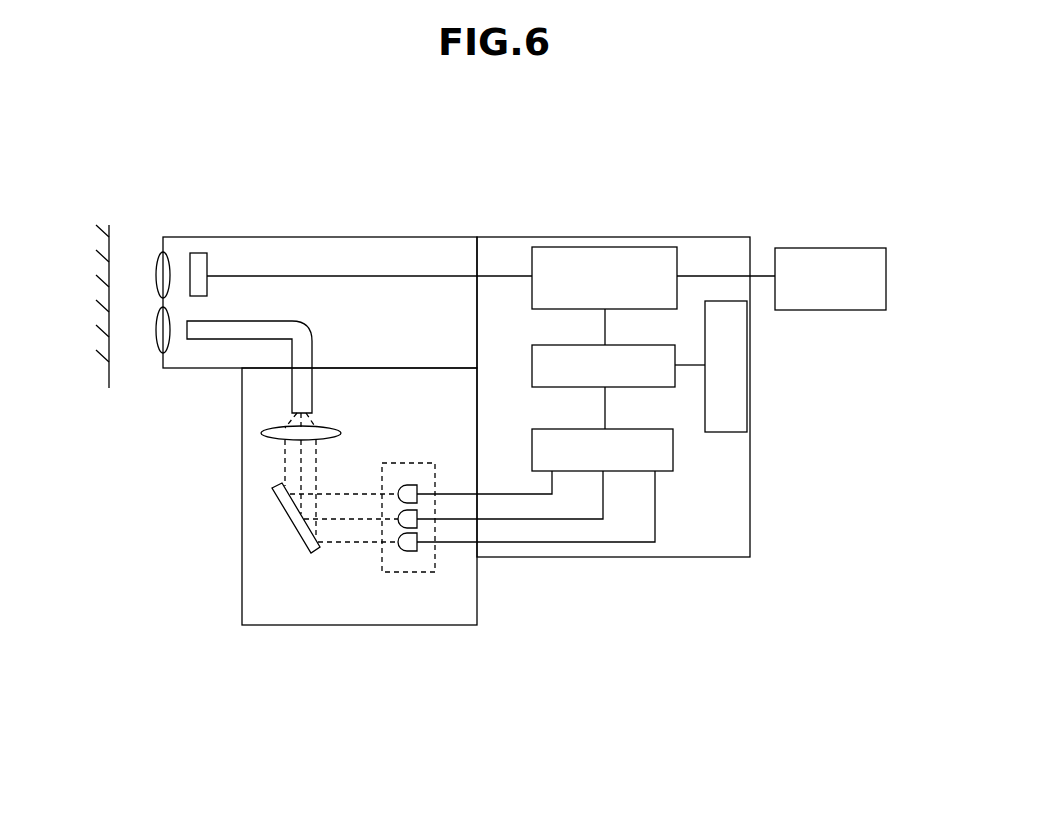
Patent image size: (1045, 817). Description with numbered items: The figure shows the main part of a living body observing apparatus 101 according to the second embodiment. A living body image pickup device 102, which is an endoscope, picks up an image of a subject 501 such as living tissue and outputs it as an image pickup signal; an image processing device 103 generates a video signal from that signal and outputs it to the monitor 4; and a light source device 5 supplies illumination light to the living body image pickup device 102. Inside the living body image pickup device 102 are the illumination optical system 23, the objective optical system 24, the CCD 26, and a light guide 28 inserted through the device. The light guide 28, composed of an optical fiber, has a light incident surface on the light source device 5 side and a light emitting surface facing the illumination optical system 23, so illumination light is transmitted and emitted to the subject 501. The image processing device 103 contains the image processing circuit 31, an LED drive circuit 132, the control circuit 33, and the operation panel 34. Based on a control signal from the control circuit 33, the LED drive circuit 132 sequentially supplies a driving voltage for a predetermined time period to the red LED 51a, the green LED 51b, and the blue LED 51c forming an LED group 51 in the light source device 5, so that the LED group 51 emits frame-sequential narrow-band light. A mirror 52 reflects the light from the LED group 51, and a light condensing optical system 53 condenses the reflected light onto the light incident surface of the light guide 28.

The living body observing apparatus 101 is at (481, 170).
The living body image pickup device 102 is at (338, 237).
The image processing device 103 is at (697, 557).
The light source device 5 is at (432, 626).
The monitor 4 is at (822, 248).
The illumination optical system 23 is at (162, 353).
The objective optical system 24 is at (162, 253).
The CCD 26 is at (197, 253).
The light guide 28 is at (313, 343).
The image processing circuit 31 is at (642, 309).
The control circuit 33 is at (642, 387).
The operation panel 34 is at (750, 365).
The LED drive circuit 132 is at (673, 450).
The LED group 51 is at (395, 462).
The red LED 51a is at (410, 486).
The green LED 51b is at (397, 520).
The blue LED 51c is at (403, 551).
The mirror 52 is at (293, 528).
The light condensing optical system 53 is at (328, 430).
The subject 501 is at (110, 353).